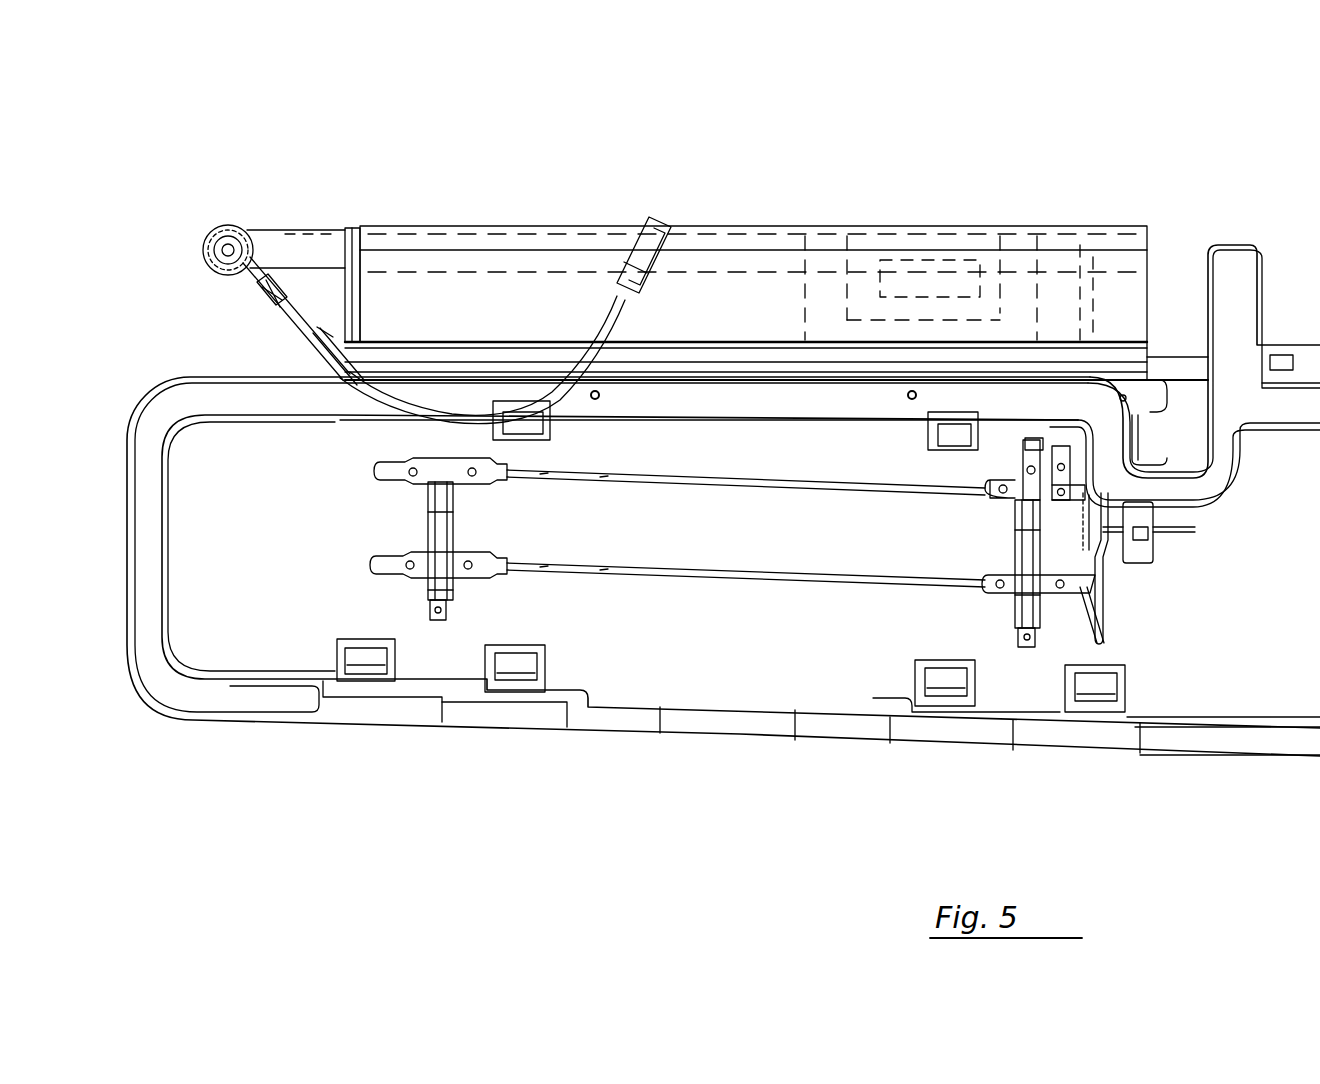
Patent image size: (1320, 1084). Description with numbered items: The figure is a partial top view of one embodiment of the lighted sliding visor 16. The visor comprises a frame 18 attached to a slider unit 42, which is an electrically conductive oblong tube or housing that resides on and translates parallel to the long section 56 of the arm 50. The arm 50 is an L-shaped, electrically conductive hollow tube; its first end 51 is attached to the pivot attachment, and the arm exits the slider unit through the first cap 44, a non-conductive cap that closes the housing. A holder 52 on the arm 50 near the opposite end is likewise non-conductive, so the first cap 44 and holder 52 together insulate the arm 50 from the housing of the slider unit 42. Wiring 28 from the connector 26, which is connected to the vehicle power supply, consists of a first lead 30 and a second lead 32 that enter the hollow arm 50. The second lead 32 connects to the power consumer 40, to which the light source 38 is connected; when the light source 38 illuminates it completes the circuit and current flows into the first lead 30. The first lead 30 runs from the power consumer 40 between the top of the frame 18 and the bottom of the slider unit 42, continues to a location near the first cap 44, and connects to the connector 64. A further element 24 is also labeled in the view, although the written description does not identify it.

The lighted sliding visor 16 is at (543, 728).
The frame 18 is at (840, 735).
The frame 24 is at (305, 375).
The connector 26 is at (647, 215).
The wiring 28 is at (400, 400).
The first lead 30 is at (330, 385).
The second lead 32 is at (1140, 455).
The light source 38 is at (455, 522).
The power consumer 40 is at (1060, 625).
The slider unit 42 is at (763, 220).
The first cap 44 is at (352, 230).
The arm 50 is at (280, 232).
The first end 51 is at (212, 236).
The holder 52 is at (975, 228).
The long section 56 is at (490, 245).
The connector 64 is at (333, 330).